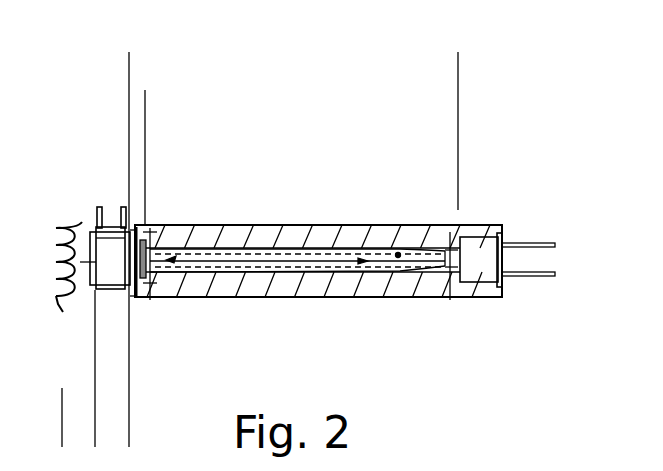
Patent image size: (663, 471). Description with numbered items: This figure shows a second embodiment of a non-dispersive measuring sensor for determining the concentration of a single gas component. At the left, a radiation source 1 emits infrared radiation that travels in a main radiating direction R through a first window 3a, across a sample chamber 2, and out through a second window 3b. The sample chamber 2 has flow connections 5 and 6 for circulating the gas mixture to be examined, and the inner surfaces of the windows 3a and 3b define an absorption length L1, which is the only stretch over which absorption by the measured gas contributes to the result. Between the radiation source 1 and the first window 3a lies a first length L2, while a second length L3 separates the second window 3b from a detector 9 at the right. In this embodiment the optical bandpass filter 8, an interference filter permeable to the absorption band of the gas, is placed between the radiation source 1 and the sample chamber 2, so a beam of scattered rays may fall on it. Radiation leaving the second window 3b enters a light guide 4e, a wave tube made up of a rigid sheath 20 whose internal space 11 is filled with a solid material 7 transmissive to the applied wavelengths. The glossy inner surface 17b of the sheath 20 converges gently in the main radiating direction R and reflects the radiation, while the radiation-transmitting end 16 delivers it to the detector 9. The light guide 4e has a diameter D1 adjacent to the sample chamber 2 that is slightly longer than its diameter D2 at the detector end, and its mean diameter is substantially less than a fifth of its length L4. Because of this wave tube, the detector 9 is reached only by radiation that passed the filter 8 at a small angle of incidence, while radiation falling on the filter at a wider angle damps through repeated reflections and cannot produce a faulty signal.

The radiation source 1 is at (82, 222).
The first window 3a is at (92, 270).
The second window 3b is at (135, 292).
The sample chamber 2 is at (112, 270).
The flow connection 5 is at (99, 197).
The flow connection 6 is at (123, 197).
The optical filter 8 is at (142, 238).
The internal space 11 is at (166, 259).
The sheath 20 is at (232, 233).
The solid material 7 is at (285, 253).
The main radiating direction R is at (310, 262).
The inner surface of the sheath 17b is at (398, 253).
The light guide 4e is at (432, 218).
The detector 9 is at (480, 252).
The radiation-transmitting end 16 is at (440, 265).
The diameter adjacent to the sample chamber D1 is at (166, 229).
The diameter at the filter and detector end D2 is at (468, 293).
The absorption length L1 is at (150, 378).
The first length L2 is at (115, 425).
The second length L3 is at (458, 69).
The light guide length L4 is at (458, 103).